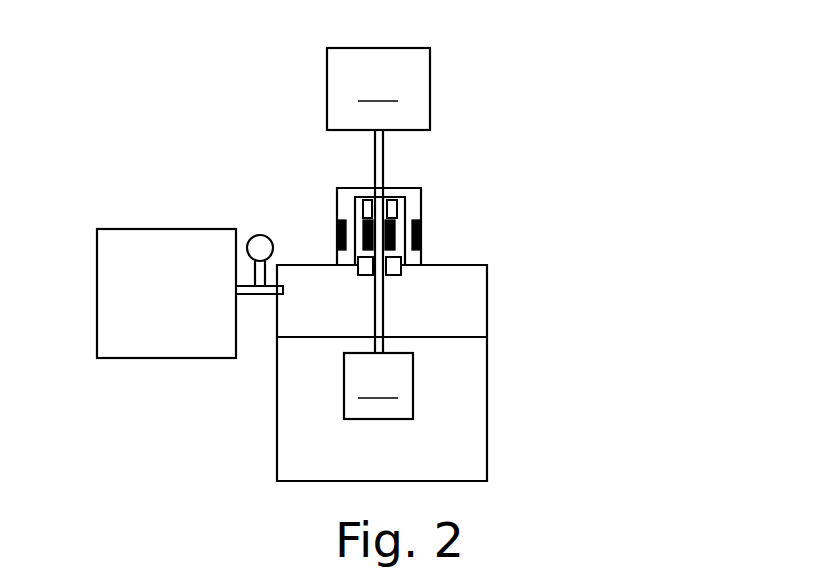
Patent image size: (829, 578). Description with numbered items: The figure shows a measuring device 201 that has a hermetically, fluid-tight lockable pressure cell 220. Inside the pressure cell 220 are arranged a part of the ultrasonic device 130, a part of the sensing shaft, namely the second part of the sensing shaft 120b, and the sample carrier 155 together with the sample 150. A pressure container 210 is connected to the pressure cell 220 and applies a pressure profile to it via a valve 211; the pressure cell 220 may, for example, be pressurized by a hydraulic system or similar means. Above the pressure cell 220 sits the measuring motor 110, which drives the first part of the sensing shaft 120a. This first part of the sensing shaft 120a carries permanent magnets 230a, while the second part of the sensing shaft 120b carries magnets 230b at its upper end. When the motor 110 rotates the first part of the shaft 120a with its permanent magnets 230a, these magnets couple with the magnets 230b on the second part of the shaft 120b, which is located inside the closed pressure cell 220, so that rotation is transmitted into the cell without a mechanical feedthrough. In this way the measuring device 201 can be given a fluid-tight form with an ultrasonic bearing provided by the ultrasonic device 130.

The measuring device 201 is at (582, 76).
The motor 110 is at (378, 89).
The first part of the sensing shaft 120a is at (402, 161).
The second part of the sensing shaft 120b is at (397, 303).
The magnets of the first part of the sensing shaft 230a is at (430, 231).
The magnets of the second part of the sensing shaft 230b is at (360, 226).
The ultrasonic device 130 is at (392, 276).
The pressure cell 220 is at (499, 313).
The sample 150 is at (378, 386).
The sample carrier 155 is at (390, 410).
The pressure container 210 is at (190, 293).
The valve 211 is at (260, 247).